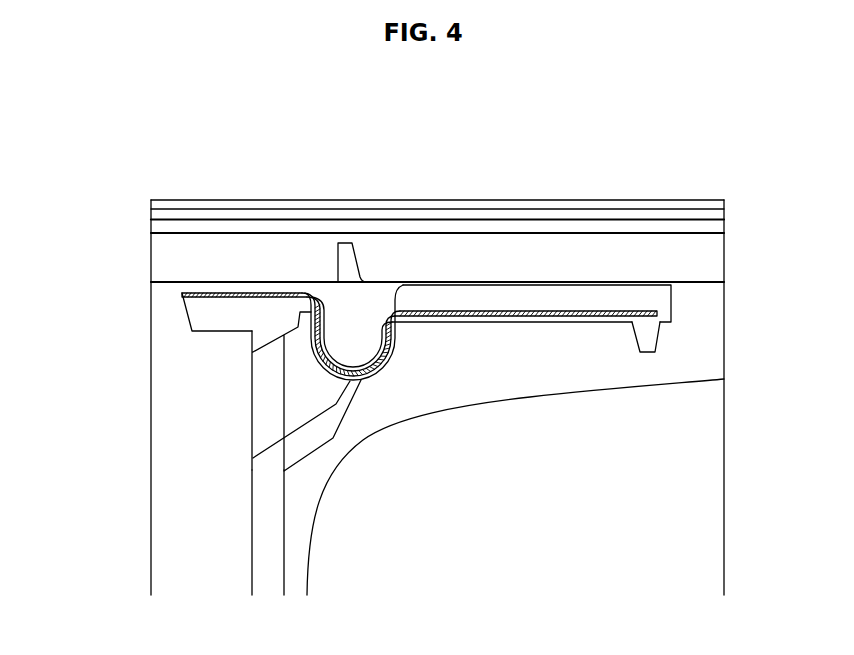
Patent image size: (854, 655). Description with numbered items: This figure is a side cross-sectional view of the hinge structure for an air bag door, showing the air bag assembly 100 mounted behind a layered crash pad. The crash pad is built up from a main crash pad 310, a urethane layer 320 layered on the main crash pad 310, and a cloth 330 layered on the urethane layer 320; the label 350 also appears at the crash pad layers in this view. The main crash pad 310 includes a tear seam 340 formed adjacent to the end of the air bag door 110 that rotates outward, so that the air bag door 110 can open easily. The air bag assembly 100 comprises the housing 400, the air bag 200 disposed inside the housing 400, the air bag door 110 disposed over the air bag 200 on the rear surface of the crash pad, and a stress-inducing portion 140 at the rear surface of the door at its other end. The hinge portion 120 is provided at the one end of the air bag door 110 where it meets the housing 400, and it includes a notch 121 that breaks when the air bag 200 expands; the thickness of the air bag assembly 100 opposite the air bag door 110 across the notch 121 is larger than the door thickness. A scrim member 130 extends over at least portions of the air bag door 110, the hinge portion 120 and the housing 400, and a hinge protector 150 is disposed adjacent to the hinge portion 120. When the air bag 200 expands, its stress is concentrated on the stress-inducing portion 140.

The air bag assembly 100 is at (237, 489).
The air bag door 110 is at (652, 295).
The hinge portion 120 is at (320, 372).
The notch 121 is at (357, 381).
The scrim member 130 is at (182, 294).
The stress-inducing portion 140 is at (650, 332).
The hinge protector 150 is at (265, 543).
The air bag 200 is at (555, 488).
The main crash pad 310 is at (192, 267).
The urethane layer 320 is at (610, 230).
The cloth 330 is at (527, 217).
The tear seam 340 is at (351, 243).
The roof panel 350 is at (285, 207).
The housing 400 is at (263, 420).